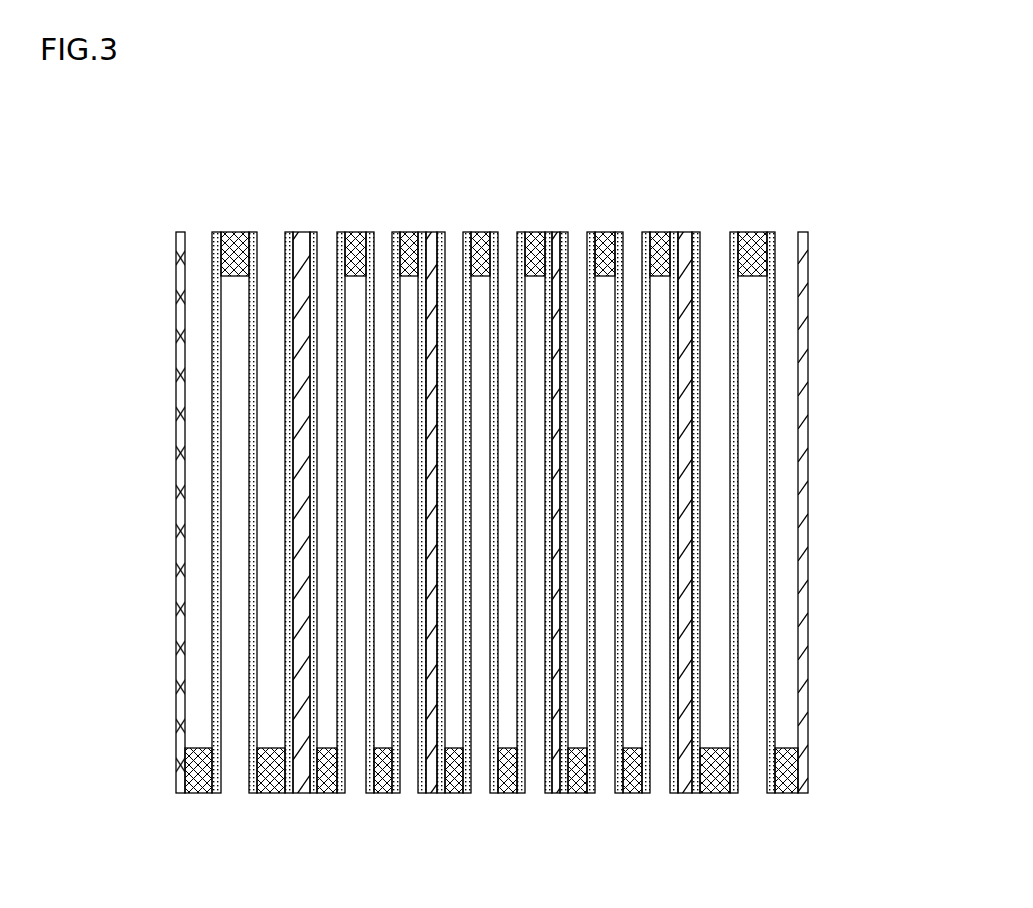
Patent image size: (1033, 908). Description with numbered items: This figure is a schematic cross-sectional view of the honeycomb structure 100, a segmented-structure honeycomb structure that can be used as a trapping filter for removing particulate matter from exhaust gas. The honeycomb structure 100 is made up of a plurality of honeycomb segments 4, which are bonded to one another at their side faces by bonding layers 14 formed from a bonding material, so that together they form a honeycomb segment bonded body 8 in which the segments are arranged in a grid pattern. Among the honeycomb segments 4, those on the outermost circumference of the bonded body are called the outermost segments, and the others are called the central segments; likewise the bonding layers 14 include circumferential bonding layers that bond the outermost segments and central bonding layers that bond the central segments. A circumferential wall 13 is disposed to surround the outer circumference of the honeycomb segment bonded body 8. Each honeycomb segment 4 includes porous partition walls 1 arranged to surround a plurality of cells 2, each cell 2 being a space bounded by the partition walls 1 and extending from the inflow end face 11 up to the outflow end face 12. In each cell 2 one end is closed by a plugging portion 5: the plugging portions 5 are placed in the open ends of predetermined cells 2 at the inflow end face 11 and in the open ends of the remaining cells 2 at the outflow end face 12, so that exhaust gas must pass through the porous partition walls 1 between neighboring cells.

The honeycomb structure 100 is at (850, 137).
The partition walls 1 is at (535, 231).
The cells 2 is at (502, 265).
The honeycomb segments 4 is at (253, 229).
The plugging portion 5 is at (483, 231).
The honeycomb segment bonded body 8 is at (708, 218).
The inflow end face 11 is at (196, 220).
The outflow end face 12 is at (210, 806).
The circumferential wall 13 is at (177, 450).
The bonding layers 14 is at (303, 234).